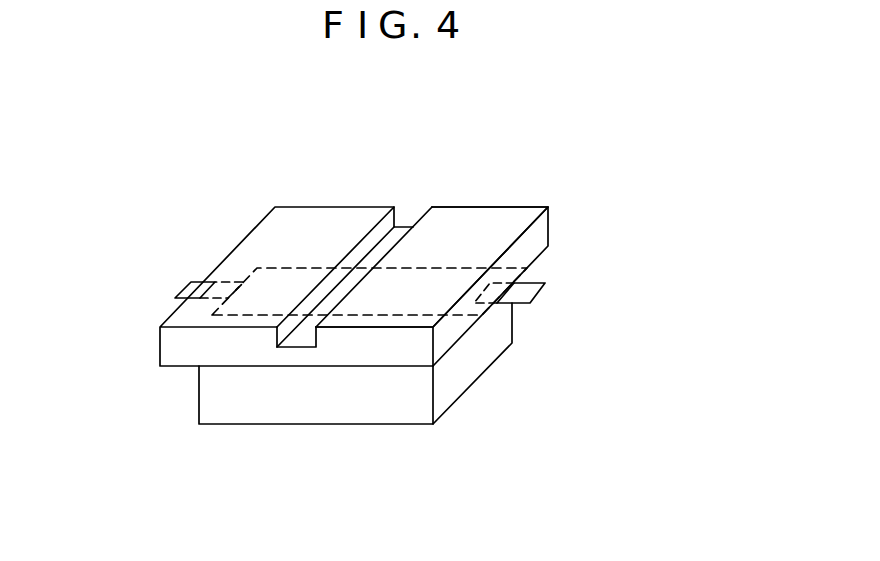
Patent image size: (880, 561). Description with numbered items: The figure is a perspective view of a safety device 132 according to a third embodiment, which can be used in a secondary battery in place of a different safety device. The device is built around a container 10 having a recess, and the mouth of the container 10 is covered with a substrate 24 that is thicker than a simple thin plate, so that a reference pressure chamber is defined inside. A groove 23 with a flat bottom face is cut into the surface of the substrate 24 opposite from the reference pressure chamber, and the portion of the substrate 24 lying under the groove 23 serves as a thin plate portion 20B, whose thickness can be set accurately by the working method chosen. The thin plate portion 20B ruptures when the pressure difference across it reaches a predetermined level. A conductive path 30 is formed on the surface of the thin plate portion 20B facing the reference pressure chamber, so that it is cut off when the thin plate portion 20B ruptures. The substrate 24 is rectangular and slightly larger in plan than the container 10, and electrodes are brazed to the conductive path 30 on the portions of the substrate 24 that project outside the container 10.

The safety device 132 is at (657, 177).
The container 10 is at (397, 405).
The thin plate portion 20B is at (295, 357).
The groove 23 is at (400, 230).
The substrate 24 is at (495, 224).
The conductive path 30 is at (473, 262).